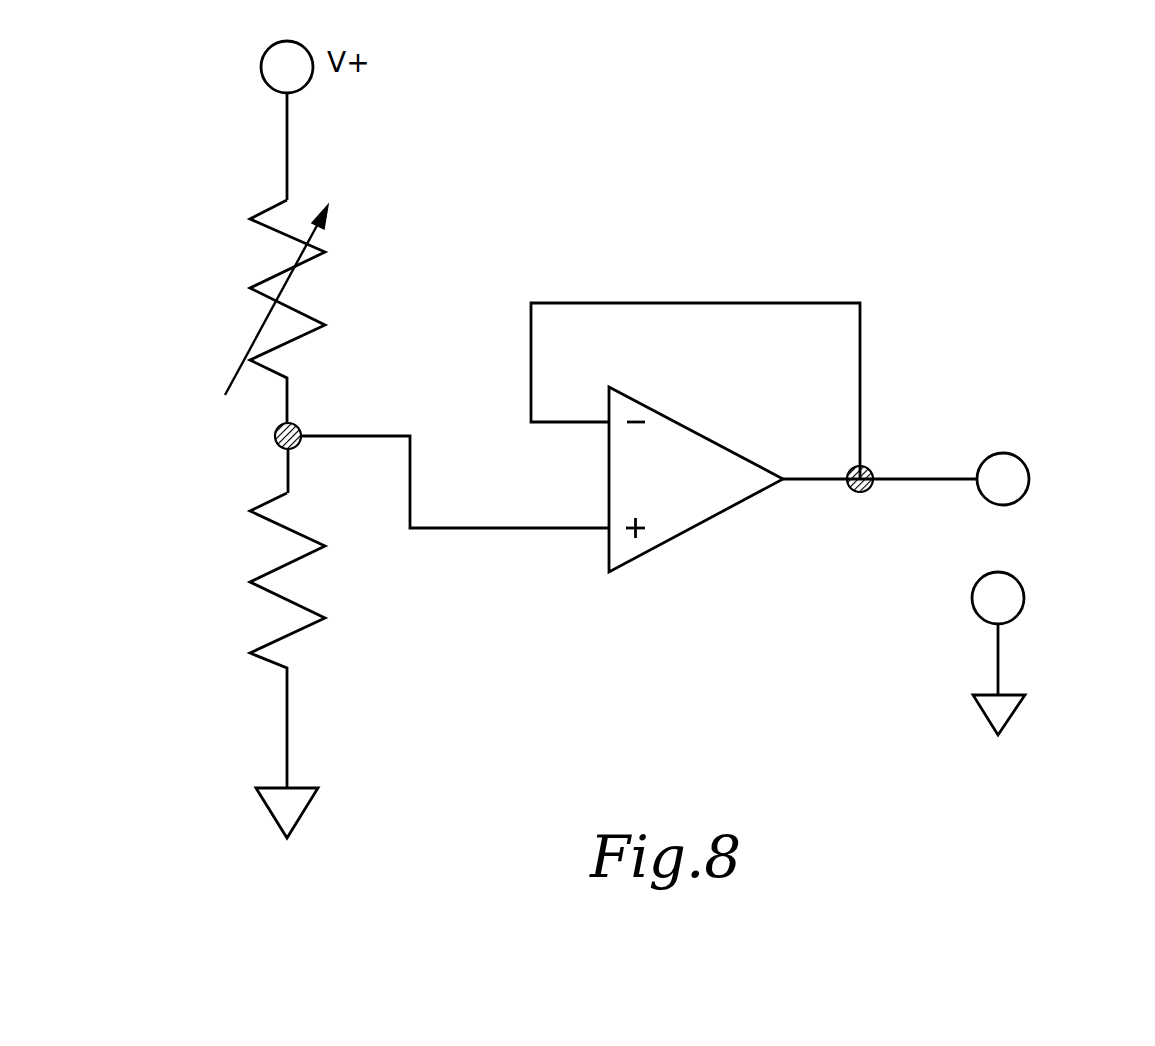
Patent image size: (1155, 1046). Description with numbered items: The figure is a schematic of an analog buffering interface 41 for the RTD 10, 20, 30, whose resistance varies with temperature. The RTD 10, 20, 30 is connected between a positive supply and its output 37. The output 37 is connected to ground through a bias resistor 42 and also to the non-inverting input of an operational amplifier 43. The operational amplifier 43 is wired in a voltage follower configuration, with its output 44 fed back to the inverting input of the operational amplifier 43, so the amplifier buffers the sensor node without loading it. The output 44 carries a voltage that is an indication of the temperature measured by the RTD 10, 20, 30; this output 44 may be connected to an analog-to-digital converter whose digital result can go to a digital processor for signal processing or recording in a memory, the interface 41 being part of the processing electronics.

The RTD 10 is at (222, 311).
The RTD 20 is at (222, 311).
The RTD 30 is at (250, 289).
The output 37 is at (301, 428).
The analog buffering interface 41 is at (550, 222).
The bias resistor 42 is at (327, 546).
The operational amplifier 43 is at (702, 432).
The output 44 is at (1027, 468).